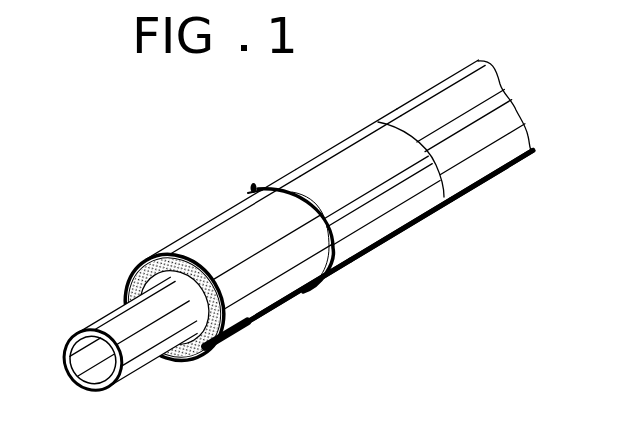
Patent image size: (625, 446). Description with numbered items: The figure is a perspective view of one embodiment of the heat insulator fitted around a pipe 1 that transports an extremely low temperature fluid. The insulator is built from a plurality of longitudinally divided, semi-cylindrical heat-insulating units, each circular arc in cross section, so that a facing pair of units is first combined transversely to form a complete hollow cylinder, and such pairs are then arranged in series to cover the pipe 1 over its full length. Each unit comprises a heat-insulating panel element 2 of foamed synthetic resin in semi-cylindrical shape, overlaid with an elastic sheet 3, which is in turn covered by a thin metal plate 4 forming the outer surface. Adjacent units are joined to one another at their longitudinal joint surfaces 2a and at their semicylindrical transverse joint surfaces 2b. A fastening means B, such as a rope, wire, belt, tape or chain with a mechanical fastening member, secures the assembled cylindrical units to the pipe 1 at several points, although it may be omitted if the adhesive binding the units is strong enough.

The pipe 1 is at (113, 319).
The heat-insulating panel element 2 is at (339, 223).
The longitudinal joint surface 2a is at (508, 170).
The semicylindrical transverse joint surface 2b is at (439, 196).
The elastic sheet 3 is at (185, 360).
The thin metal plate 4 is at (261, 304).
The fastening means B is at (341, 260).